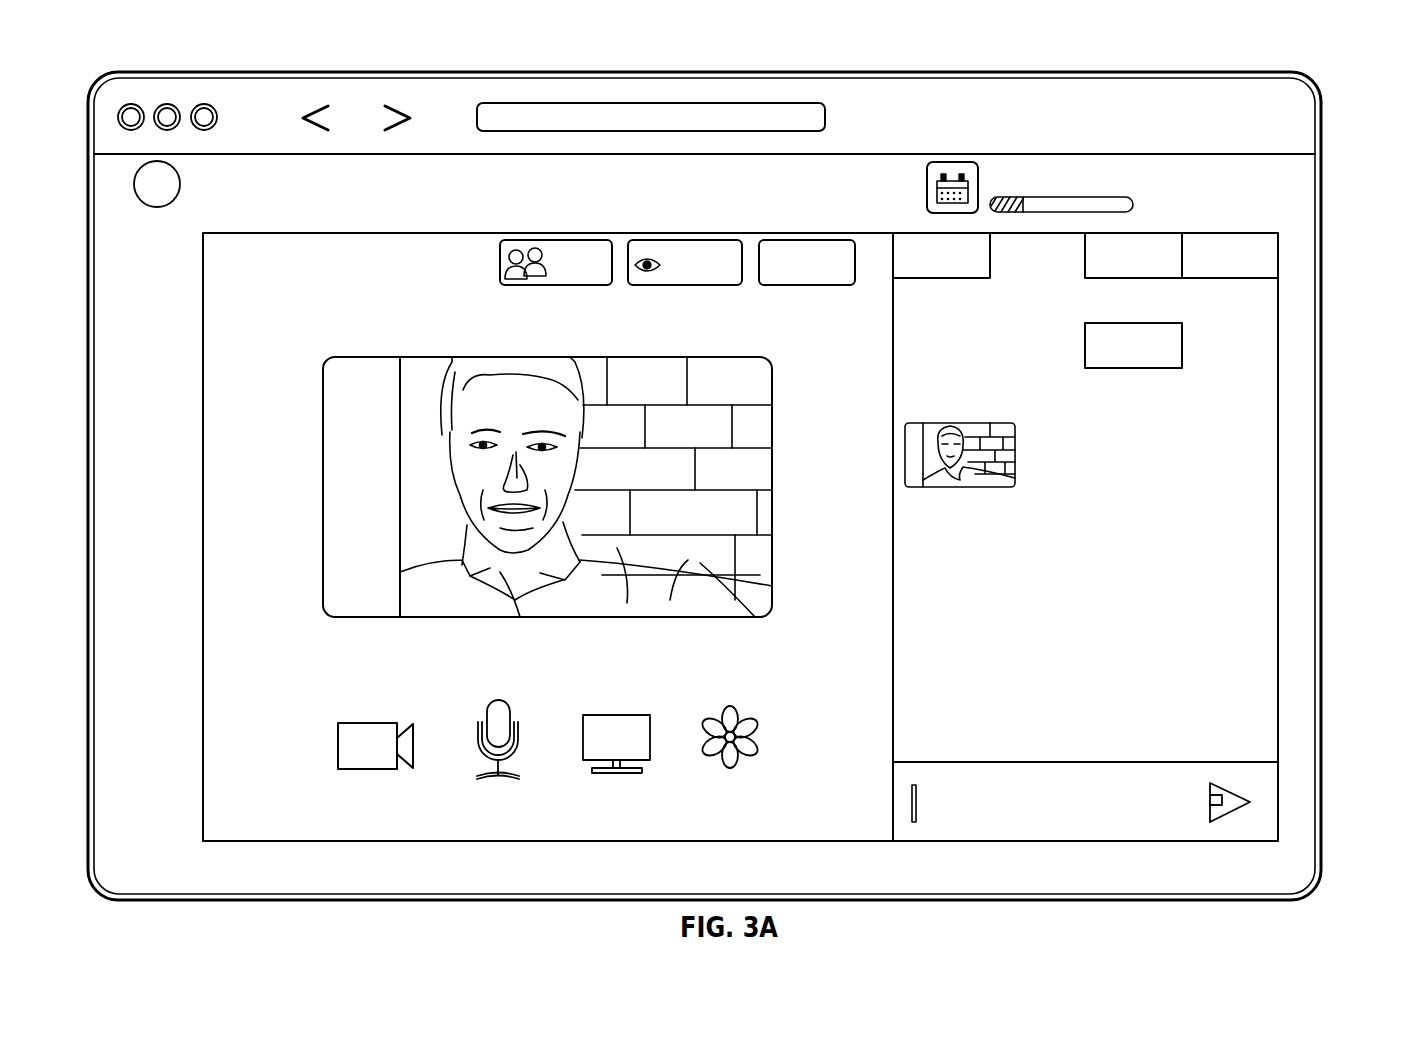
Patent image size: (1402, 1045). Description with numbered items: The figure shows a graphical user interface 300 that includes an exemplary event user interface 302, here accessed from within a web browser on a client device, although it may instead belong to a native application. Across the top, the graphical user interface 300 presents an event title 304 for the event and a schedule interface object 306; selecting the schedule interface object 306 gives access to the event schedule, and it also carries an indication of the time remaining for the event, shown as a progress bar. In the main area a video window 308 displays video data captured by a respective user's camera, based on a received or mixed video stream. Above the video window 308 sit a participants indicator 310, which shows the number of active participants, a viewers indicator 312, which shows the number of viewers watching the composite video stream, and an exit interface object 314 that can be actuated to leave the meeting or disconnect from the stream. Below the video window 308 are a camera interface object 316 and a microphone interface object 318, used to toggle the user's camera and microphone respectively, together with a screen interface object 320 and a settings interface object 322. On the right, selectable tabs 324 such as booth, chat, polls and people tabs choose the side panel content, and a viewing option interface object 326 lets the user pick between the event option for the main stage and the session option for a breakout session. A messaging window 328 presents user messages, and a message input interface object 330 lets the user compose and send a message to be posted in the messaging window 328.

The graphical user interface 300 is at (1184, 60).
The event user interface 302 is at (85, 181).
The event title 304 is at (232, 163).
The schedule interface object 306 is at (957, 160).
The video window 308 is at (323, 443).
The participants indicator 310 is at (500, 264).
The viewers indicator 312 is at (703, 286).
The exit interface object 314 is at (826, 286).
The camera interface object 316 is at (367, 770).
The microphone interface object 318 is at (500, 778).
The screen interface object 320 is at (632, 774).
The settings interface object 322 is at (727, 770).
The selectable tabs 324 is at (1056, 272).
The viewing option interface object 326 is at (1183, 343).
The messaging window 328 is at (1258, 482).
The message input interface object 330 is at (1258, 770).